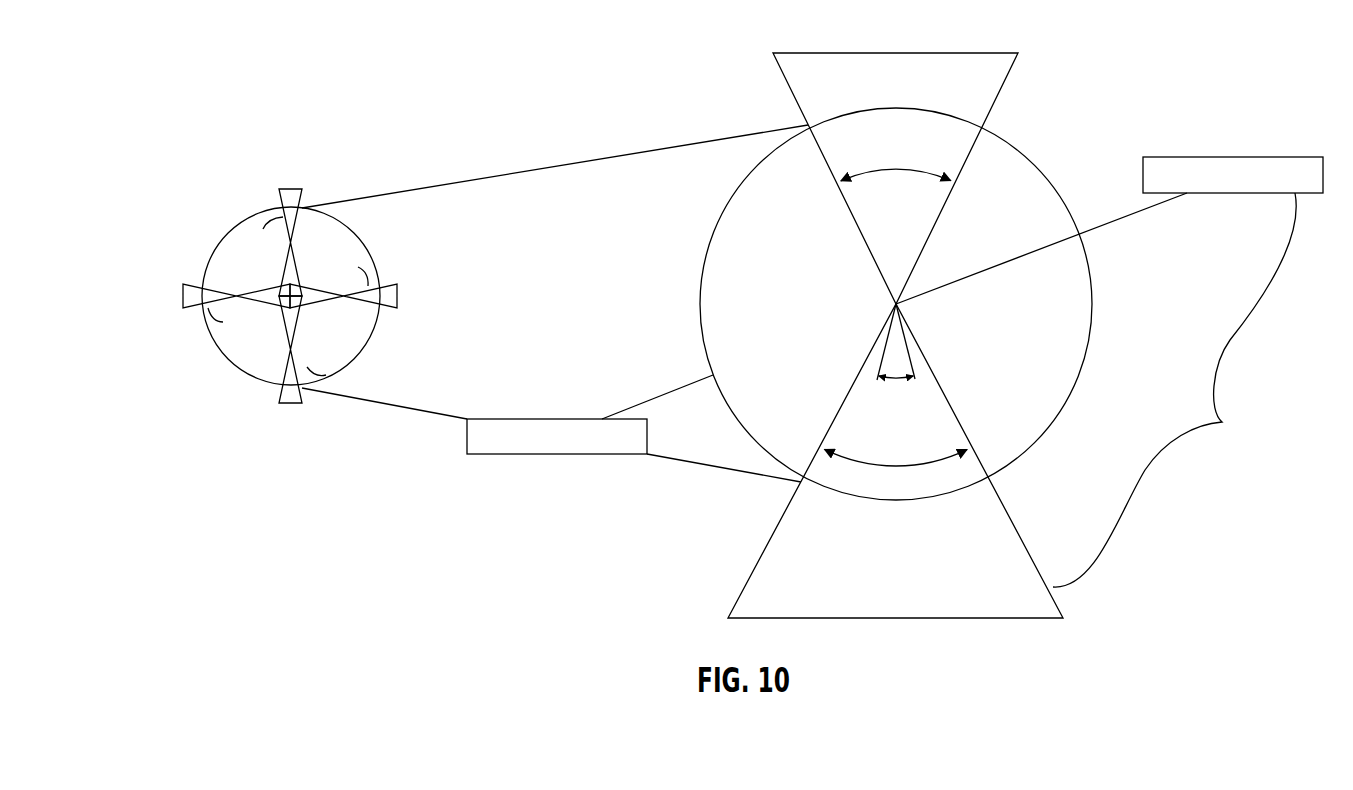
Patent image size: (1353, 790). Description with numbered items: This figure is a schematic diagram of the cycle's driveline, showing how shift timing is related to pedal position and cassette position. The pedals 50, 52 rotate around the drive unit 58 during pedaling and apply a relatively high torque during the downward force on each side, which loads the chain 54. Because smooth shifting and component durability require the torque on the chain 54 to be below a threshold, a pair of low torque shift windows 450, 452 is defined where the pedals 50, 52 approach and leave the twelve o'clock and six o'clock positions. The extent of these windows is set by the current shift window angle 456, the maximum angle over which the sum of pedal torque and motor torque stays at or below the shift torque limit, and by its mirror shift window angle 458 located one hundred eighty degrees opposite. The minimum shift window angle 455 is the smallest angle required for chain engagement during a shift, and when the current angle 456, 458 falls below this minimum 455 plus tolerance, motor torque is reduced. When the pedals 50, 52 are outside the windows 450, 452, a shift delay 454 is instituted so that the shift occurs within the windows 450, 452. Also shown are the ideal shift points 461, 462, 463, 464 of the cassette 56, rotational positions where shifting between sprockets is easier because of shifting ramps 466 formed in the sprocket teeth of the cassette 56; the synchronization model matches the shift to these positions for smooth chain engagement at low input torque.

The pedal 50 is at (1287, 157).
The pedal 52 is at (510, 455).
The chain 54 is at (578, 161).
The cassette 56 is at (230, 232).
The drive unit 58 is at (1103, 87).
The low torque shift window 450 is at (918, 217).
The low torque shift window 452 is at (918, 448).
The shift delay 454 is at (998, 347).
The minimum shift window angle 455 is at (897, 381).
The current shift window angle 456 is at (900, 467).
The mirror shift window angle 458 is at (895, 170).
The ideal shift point 461 is at (290, 189).
The ideal shift point 462 is at (397, 296).
The ideal shift point 463 is at (290, 403).
The ideal shift point 464 is at (182, 295).
The shifting ramp 466 is at (316, 377).